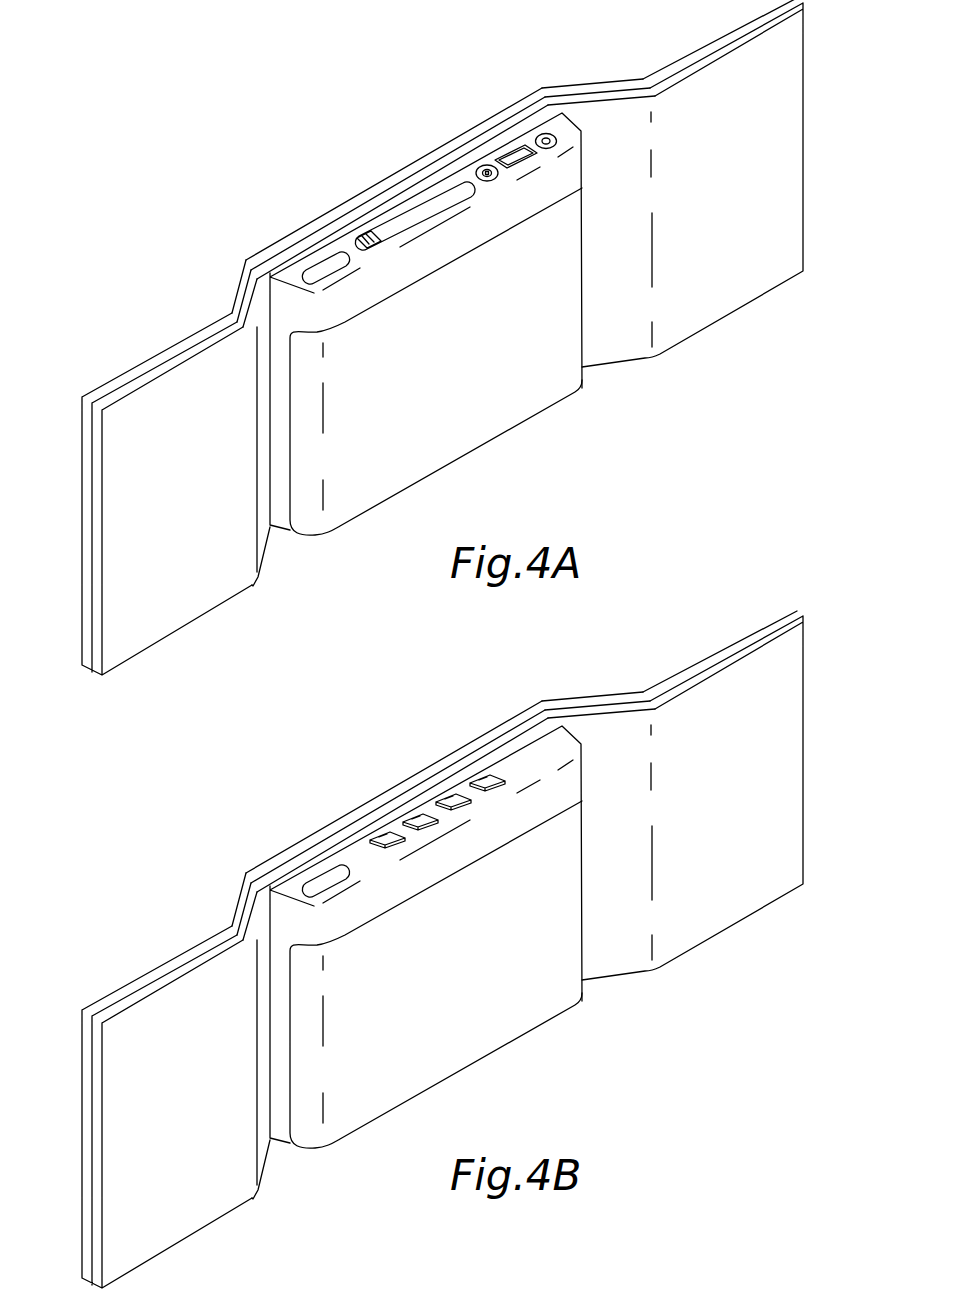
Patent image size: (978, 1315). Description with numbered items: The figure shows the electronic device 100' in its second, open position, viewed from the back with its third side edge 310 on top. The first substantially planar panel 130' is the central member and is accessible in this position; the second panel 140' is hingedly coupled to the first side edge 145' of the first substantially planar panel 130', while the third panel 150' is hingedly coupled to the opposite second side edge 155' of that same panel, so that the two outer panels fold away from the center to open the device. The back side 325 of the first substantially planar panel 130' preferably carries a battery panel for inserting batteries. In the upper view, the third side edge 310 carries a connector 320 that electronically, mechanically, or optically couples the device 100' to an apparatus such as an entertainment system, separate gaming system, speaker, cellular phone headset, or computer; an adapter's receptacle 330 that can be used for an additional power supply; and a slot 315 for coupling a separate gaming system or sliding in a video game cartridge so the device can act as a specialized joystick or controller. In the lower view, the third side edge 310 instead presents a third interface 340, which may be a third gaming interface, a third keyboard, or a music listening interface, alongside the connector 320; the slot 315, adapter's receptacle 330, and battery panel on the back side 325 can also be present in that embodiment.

In FIG. 4B, the electronic device 100' is at (447, 943).
In FIG. 4B, the first substantially planar panel 130' is at (374, 796).
In FIG. 4B, the second panel 140' is at (133, 1107).
In FIG. 4B, the first side edge 145' is at (206, 1029).
In FIG. 4B, the third panel 150' is at (733, 795).
In FIG. 4B, the second side edge 155' is at (616, 658).
In FIG. 4A, the third side edge 310 is at (465, 165).
In FIG. 4B, the third side edge 310 is at (426, 945).
In FIG. 4A, the slot 315 is at (440, 200).
In FIG. 4A, the connector 320 is at (332, 267).
In FIG. 4B, the connector 320 is at (328, 826).
In FIG. 4A, the back side 325 is at (358, 487).
In FIG. 4B, the back side 325 is at (436, 1009).
In FIG. 4A, the adapter's receptacle 330 is at (547, 130).
In FIG. 4B, the third interface 340 is at (437, 781).